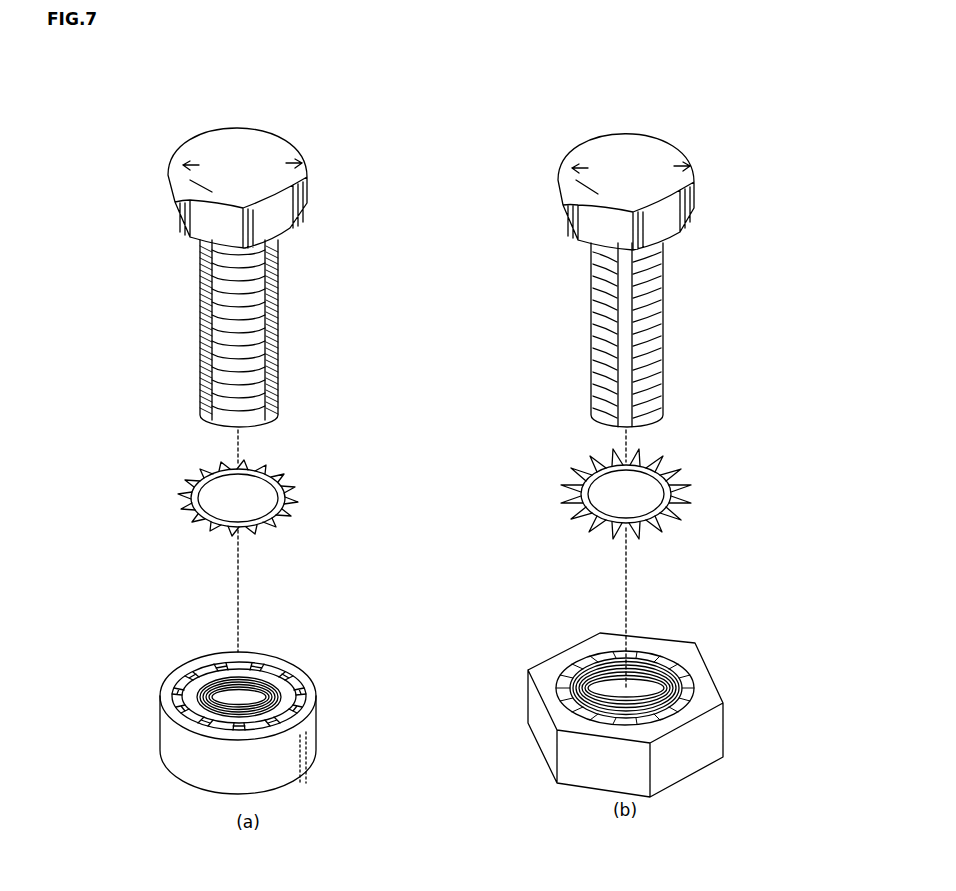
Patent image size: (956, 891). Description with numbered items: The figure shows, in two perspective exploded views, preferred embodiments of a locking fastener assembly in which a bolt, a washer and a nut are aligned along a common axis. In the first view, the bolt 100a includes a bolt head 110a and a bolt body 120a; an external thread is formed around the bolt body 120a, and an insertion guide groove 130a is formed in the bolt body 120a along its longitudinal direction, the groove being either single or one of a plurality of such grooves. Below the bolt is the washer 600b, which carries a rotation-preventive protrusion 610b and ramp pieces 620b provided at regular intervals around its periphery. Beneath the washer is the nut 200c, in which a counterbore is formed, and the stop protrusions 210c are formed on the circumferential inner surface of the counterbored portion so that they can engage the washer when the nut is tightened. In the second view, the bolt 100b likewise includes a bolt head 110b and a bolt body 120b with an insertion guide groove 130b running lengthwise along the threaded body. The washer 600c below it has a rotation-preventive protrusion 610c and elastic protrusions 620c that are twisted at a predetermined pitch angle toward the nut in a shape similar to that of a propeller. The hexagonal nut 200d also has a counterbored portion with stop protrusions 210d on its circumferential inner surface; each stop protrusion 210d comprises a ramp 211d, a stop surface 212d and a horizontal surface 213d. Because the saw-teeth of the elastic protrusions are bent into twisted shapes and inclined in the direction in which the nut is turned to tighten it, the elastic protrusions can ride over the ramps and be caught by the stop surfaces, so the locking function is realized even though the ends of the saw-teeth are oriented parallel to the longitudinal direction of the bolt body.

The bolt 100a is at (296, 247).
The bolt head 110a is at (307, 197).
The bolt body 120a is at (282, 333).
The insertion guide groove 130a is at (260, 342).
The washer 600b is at (273, 496).
The rotation-preventive protrusion 610b is at (198, 506).
The ramp piece 620b is at (266, 529).
The nut 200c is at (261, 690).
The stop protrusion 210c is at (186, 663).
The bolt 100b is at (683, 247).
The bolt head 110b is at (694, 205).
The bolt body 120b is at (683, 335).
The insertion guide groove 130b is at (634, 340).
The washer 600c is at (682, 501).
The rotation-preventive protrusion 610c is at (665, 524).
The elastic protrusion 620c is at (592, 520).
The nut 200d is at (692, 690).
The stop protrusion 210d is at (704, 654).
The ramp 211d is at (660, 640).
The stop surface 212d is at (655, 653).
The horizontal surface 213d is at (655, 648).